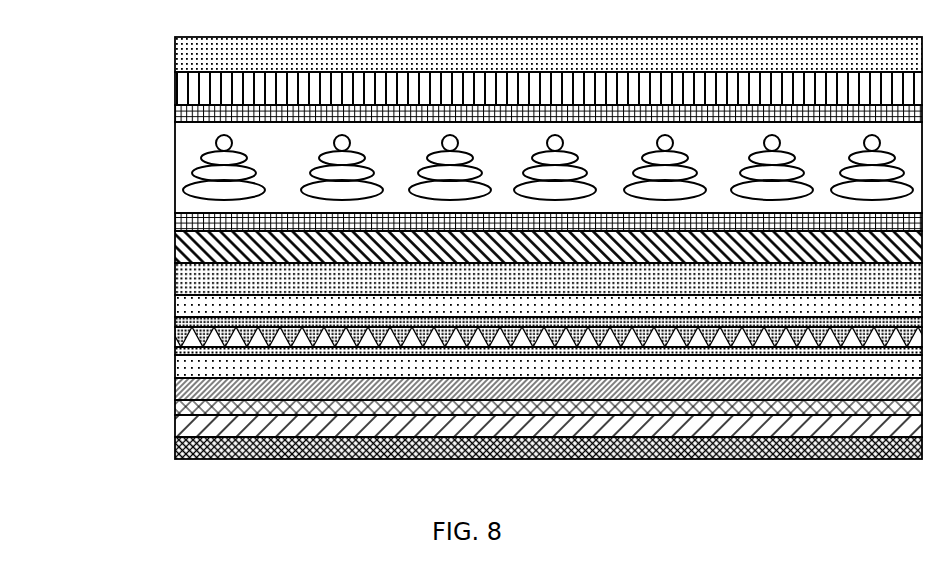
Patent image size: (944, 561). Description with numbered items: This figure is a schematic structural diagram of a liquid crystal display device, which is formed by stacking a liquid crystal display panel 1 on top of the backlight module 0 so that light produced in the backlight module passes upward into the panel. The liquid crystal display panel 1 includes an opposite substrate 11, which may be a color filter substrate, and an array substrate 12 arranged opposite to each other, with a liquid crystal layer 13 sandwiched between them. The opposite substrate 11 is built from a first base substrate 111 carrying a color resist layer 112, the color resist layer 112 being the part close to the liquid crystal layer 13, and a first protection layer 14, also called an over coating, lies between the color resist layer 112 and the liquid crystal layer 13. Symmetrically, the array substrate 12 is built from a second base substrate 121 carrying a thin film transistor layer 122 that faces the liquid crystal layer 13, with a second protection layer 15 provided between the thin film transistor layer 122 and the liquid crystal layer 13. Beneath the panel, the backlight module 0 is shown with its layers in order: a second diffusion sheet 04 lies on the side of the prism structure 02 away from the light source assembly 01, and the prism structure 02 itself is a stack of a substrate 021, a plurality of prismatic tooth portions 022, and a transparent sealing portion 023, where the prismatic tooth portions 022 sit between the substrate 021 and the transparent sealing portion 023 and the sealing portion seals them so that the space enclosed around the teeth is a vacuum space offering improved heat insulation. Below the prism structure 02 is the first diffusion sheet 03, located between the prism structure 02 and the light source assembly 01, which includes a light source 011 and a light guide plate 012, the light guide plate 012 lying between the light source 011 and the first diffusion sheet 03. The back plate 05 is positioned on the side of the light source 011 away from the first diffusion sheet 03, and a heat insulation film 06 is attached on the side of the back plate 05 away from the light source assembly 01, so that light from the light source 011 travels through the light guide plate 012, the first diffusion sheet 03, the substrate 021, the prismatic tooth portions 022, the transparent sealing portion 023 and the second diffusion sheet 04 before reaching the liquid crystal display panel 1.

The liquid crystal display panel 1 is at (53, 62).
The opposite substrate 11 is at (102, 58).
The first base substrate 111 is at (177, 57).
The color resist layer 112 is at (177, 90).
The first protection layer 14 is at (177, 114).
The liquid crystal layer 13 is at (177, 178).
The second protection layer 15 is at (177, 222).
The array substrate 12 is at (100, 250).
The thin film transistor layer 122 is at (177, 252).
The second base substrate 121 is at (177, 282).
The backlight module 0 is at (53, 295).
The second diffusion sheet 04 is at (177, 306).
The prism structure 02 is at (100, 321).
The transparent sealing portion 023 is at (177, 322).
The prismatic tooth portions 022 is at (177, 337).
The substrate 021 is at (177, 352).
The first diffusion sheet 03 is at (177, 370).
The light source assembly 01 is at (100, 392).
The light guide plate 012 is at (177, 390).
The light source 011 is at (177, 408).
The back plate 05 is at (177, 427).
The heat insulation film 06 is at (177, 450).